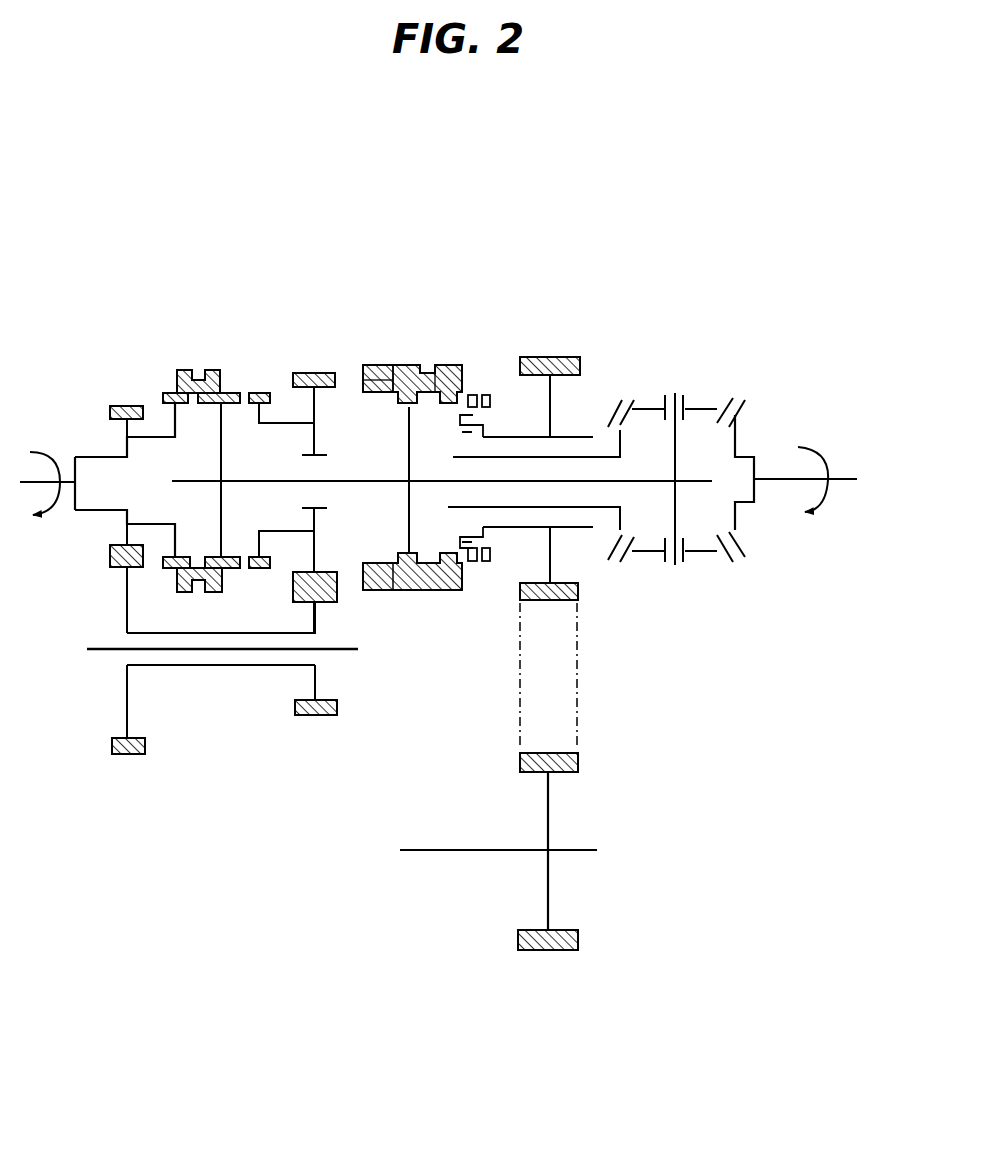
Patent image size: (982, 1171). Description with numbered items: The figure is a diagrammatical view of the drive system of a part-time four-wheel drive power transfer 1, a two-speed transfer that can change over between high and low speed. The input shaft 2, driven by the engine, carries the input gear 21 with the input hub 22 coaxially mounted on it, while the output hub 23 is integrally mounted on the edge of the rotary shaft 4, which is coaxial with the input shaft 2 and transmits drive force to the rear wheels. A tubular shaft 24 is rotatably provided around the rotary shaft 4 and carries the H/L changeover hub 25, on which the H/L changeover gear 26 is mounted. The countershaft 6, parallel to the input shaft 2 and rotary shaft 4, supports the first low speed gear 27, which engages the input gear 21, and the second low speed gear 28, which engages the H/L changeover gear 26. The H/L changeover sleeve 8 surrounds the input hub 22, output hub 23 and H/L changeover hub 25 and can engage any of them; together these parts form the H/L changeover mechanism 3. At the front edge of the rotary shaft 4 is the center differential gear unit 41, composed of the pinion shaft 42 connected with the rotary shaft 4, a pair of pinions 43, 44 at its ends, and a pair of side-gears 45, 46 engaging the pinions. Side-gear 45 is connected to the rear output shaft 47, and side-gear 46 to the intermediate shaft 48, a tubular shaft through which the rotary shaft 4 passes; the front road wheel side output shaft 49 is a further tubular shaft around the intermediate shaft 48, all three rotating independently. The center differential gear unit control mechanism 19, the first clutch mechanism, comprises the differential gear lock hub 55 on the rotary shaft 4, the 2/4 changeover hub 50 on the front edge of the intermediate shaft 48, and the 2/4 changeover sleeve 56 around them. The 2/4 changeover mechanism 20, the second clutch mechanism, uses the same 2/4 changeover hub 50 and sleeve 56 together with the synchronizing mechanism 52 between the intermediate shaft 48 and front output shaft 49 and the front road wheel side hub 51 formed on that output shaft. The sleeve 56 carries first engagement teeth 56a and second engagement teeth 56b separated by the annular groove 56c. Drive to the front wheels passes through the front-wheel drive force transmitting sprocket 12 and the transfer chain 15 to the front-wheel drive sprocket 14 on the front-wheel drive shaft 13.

The transmission 1 is at (97, 793).
The input shaft 2 is at (43, 500).
The H/L changeover mechanism 3 is at (125, 660).
The rotary shaft 4 is at (338, 488).
The countershaft 6 is at (227, 650).
The H/L changeover sleeve 8 is at (182, 370).
The front-wheel drive force transmitting sprocket 12 is at (537, 356).
The front-wheel drive shaft 13 is at (463, 853).
The front-wheel drive sprocket 14 is at (548, 952).
The transfer chain 15 is at (520, 645).
The center differential gear unit control mechanism 19 is at (405, 610).
The 2/4 changeover mechanism 20 is at (465, 610).
The input gear 21 is at (110, 408).
The input hub 22 is at (163, 396).
The output hub 23 is at (233, 393).
The tubular shaft 24 is at (277, 423).
The H/L changeover hub 25 is at (264, 392).
The H/L changeover gear 26 is at (317, 372).
The first low speed gear 27 is at (134, 757).
The second low speed gear 28 is at (307, 716).
The center differential gear unit 41 is at (742, 440).
The pinion shaft 42 is at (676, 468).
The pinion 43 is at (640, 407).
The pinion 44 is at (697, 562).
The side-gear 45 is at (736, 522).
The side-gear 46 is at (613, 534).
The rear output shaft 47 is at (850, 477).
The intermediate shaft 48 is at (573, 456).
The front road wheel side output shaft 49 is at (500, 530).
The 2/4 changeover hub 50 is at (428, 588).
The front road wheel side hub 51 is at (488, 403).
The synchronizing mechanism 52 is at (475, 395).
The differential gear lock hub 55 is at (412, 410).
The 2/4 changeover sleeve 56 is at (372, 365).
The first engagement teeth 56a is at (440, 365).
The second engagement teeth 56b is at (363, 390).
The annular groove 56c is at (393, 367).